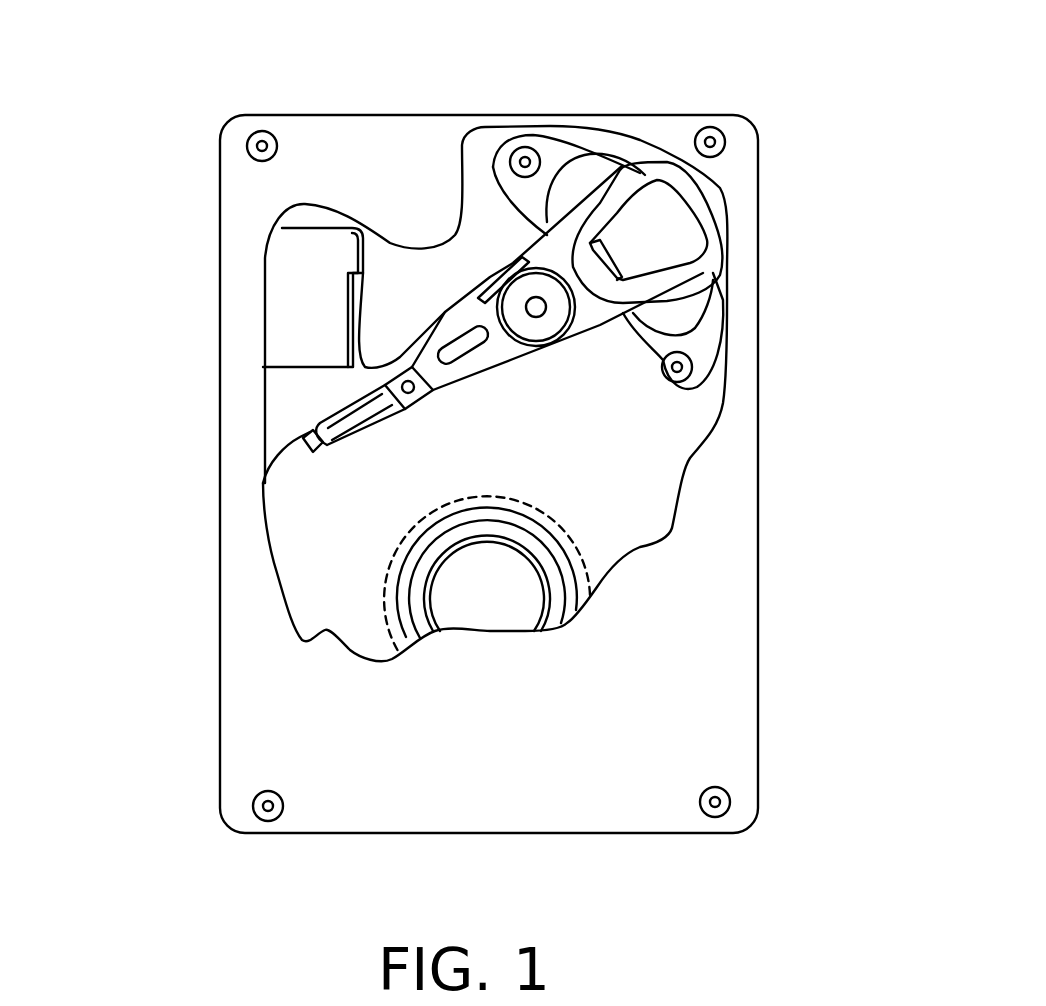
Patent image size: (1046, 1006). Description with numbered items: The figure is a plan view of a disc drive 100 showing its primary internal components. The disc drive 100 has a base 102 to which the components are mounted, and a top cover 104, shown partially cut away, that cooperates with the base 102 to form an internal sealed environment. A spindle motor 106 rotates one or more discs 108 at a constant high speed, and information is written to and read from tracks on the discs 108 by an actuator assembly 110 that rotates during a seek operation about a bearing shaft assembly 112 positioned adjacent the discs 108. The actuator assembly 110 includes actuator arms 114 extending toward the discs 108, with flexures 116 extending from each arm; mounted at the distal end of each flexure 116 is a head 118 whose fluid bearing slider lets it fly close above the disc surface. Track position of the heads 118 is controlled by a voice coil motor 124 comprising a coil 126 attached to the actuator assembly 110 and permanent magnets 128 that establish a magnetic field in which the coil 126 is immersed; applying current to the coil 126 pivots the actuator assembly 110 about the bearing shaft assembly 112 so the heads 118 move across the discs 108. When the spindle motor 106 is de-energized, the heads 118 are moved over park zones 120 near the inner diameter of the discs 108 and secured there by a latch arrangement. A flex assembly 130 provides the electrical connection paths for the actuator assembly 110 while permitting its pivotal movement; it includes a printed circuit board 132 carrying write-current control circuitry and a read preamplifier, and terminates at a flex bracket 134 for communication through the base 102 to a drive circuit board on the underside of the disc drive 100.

The disc drive 100 is at (188, 103).
The base 102 is at (290, 402).
The top cover 104 is at (288, 710).
The spindle motor 106 is at (483, 600).
The discs 108 is at (626, 530).
The actuator assembly 110 is at (513, 380).
The bearing shaft assembly 112 is at (542, 308).
The actuator arms 114 is at (471, 372).
The flexures 116 is at (343, 428).
The head 118 is at (313, 443).
The park zones 120 is at (384, 602).
The voice coil motor 124 is at (593, 165).
The coil 126 is at (712, 235).
The permanent magnets 128 is at (560, 187).
The flex assembly 130 is at (448, 312).
The printed circuit board 132 is at (495, 272).
The flex bracket 134 is at (300, 287).